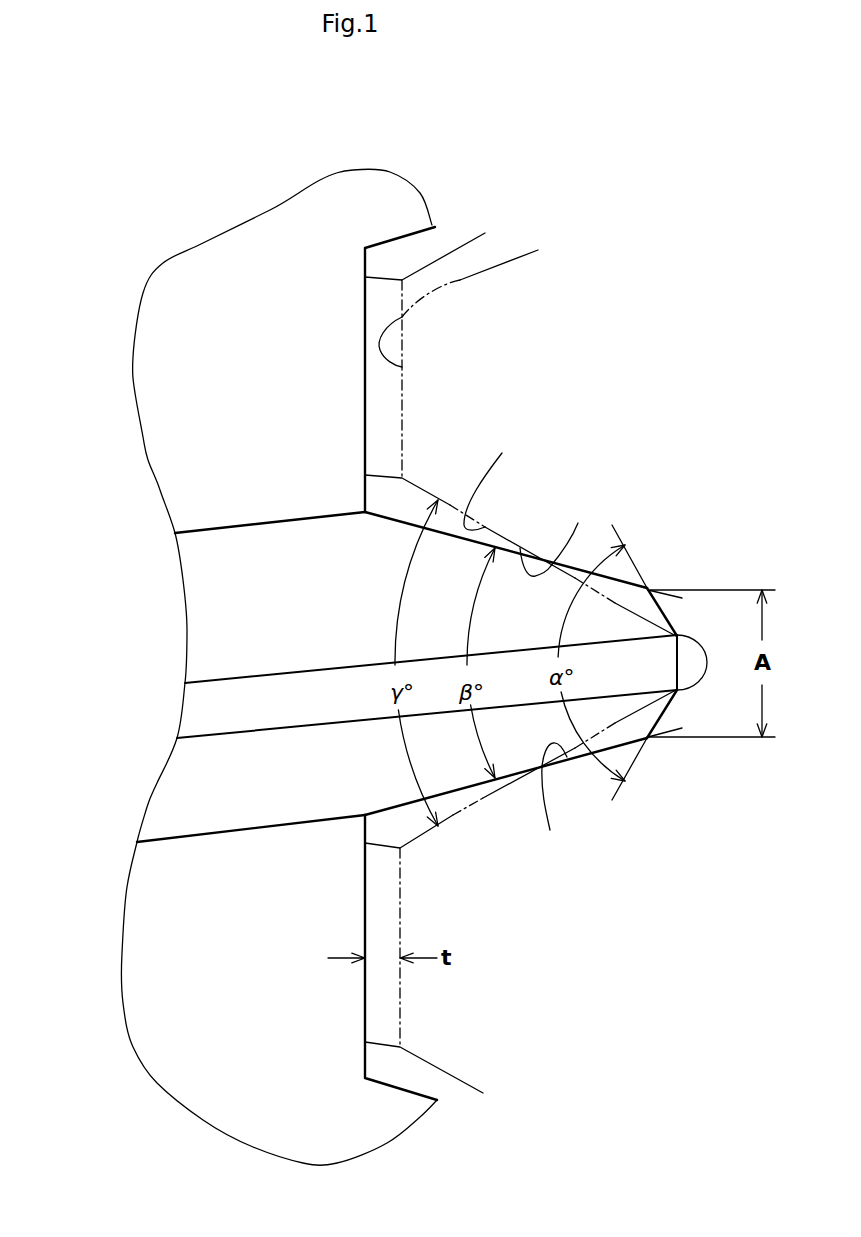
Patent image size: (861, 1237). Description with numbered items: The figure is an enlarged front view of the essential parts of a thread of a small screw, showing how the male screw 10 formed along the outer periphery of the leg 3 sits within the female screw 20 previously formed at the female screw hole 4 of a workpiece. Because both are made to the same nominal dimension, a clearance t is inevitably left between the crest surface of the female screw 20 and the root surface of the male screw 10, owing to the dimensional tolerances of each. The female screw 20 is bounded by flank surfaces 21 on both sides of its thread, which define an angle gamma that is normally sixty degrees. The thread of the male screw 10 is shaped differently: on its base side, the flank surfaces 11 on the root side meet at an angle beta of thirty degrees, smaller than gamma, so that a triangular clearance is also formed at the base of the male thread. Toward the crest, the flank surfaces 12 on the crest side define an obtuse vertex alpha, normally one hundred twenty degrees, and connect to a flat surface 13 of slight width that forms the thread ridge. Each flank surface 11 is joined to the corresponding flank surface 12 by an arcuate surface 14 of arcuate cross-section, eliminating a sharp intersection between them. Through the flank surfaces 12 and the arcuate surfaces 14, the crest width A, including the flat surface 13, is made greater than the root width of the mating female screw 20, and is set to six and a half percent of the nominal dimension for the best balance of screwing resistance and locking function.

The leg 3 is at (257, 374).
The female screw hole 4 is at (583, 256).
The male screw 10 is at (432, 626).
The flank surface on the root side 11 is at (403, 518).
The flank surface on the crest side 12 is at (672, 620).
The flat surface 13 is at (683, 673).
The arcuate surface 14 is at (648, 583).
The female screw 20 is at (502, 453).
The flank surface 21 is at (578, 523).